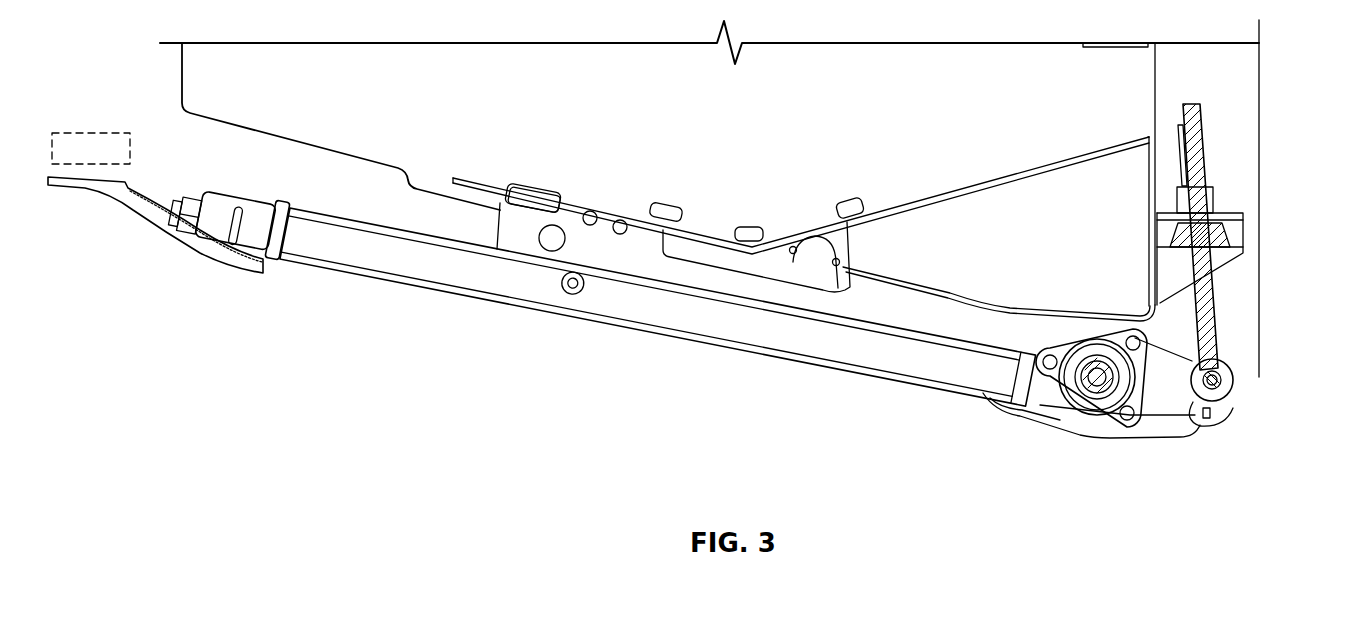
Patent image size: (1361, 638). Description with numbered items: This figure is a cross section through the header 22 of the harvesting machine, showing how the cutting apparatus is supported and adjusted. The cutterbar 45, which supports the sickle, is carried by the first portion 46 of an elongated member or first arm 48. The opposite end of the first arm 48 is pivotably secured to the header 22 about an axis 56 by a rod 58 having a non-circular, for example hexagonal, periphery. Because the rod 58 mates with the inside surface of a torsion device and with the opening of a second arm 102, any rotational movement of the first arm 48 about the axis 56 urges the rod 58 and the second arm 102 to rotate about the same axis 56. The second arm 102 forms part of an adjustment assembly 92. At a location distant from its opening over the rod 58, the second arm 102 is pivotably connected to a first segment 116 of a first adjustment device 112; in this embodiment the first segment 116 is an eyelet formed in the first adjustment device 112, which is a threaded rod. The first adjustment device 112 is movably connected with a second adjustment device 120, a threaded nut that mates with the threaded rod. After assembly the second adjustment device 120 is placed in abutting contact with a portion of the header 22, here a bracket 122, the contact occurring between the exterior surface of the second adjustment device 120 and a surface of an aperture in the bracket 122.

The header 22 is at (805, 118).
The cutterbar 45 is at (86, 133).
The first portion 46 is at (135, 225).
The first arm 48 is at (526, 290).
The axis 56 is at (1098, 380).
The rod 58 is at (1077, 375).
The adjustment assembly 92 is at (1138, 419).
The second arm 102 is at (1147, 390).
The first adjustment device 112 is at (1205, 298).
The first segment 116 is at (1217, 388).
The second adjustment device 120 is at (1213, 210).
The bracket 122 is at (1237, 230).